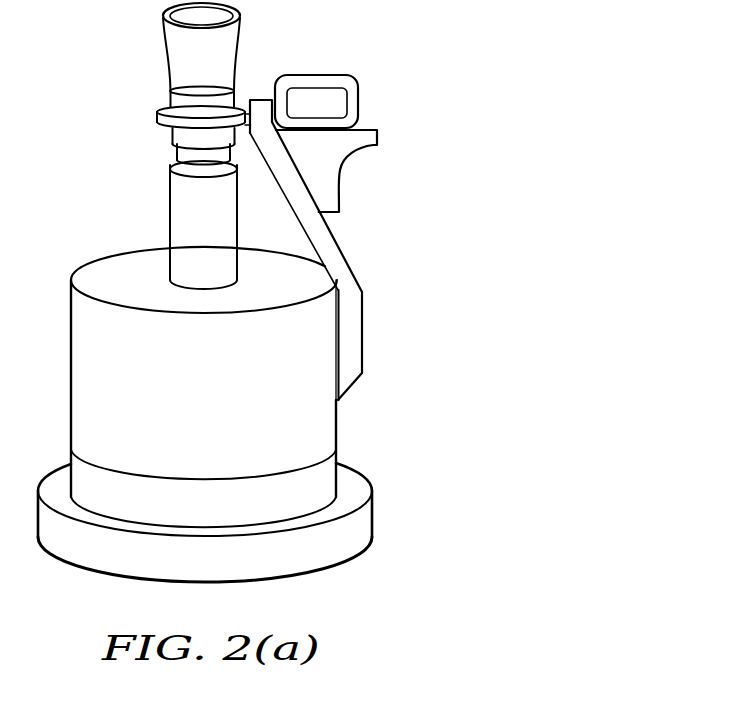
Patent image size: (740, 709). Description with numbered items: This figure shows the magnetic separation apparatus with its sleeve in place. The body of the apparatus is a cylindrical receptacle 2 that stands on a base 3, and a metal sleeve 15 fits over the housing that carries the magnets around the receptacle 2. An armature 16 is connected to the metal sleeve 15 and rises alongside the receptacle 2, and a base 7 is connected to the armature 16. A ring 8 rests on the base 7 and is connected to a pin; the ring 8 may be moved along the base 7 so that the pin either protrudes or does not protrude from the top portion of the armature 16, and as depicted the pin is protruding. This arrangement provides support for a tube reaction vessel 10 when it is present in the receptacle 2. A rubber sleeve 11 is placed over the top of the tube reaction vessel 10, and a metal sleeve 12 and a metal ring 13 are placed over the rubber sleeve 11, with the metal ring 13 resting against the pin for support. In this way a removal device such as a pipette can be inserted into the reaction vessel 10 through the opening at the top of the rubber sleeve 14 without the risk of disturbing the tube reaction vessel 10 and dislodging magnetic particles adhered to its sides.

The opening at the top of the rubber sleeve 14 is at (230, 14).
The rubber sleeve 11 is at (177, 42).
The metal sleeve 12 is at (171, 96).
The metal ring 13 is at (157, 118).
The tube reaction vessel 10 is at (168, 230).
The cylindrical receptacle 2 is at (238, 279).
The base 3 is at (366, 515).
The ring 8 is at (353, 97).
The base 7 is at (380, 149).
The armature 16 is at (348, 270).
The metal sleeve 15 is at (332, 423).